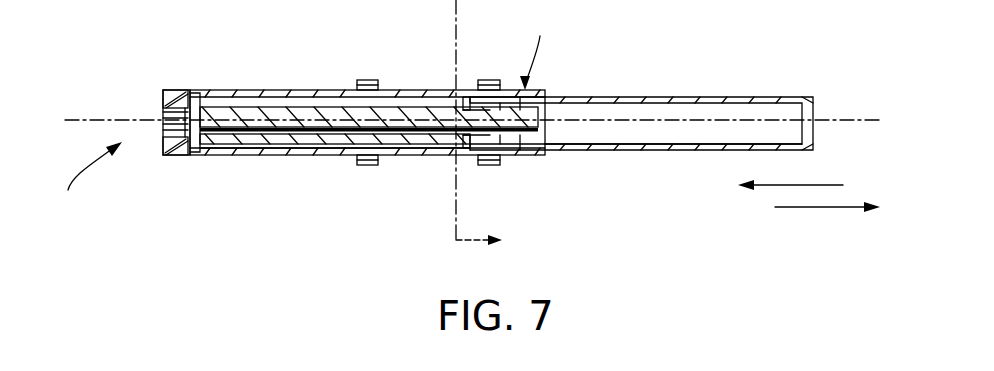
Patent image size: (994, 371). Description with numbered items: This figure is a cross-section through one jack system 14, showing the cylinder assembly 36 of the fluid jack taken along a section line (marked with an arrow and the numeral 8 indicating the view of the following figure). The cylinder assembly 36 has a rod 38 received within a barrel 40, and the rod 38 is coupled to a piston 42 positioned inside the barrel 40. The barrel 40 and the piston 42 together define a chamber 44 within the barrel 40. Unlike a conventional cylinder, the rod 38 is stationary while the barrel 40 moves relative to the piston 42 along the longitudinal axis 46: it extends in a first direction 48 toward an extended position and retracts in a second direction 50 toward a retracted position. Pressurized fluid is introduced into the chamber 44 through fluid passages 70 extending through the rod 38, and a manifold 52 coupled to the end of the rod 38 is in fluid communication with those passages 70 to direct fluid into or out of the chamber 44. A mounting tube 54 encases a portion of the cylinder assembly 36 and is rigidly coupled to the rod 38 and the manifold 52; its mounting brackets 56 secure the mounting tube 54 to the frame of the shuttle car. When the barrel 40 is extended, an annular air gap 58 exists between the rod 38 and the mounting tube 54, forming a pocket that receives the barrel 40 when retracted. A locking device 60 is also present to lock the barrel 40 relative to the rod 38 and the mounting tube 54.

The jack system 14 is at (88, 181).
The cylinder assembly 36 is at (536, 50).
The rod 38 is at (321, 114).
The barrel 40 is at (655, 97).
The piston 42 is at (540, 125).
The chamber 44 is at (615, 150).
The longitudinal axis 46 is at (862, 120).
The first direction 48 is at (845, 184).
The second direction 50 is at (800, 212).
The manifold 52 is at (178, 90).
The mounting tube 54 is at (245, 90).
The mounting brackets 56 is at (372, 80).
The annular air gap 58 is at (292, 151).
The locking device 60 is at (460, 150).
The fluid passages 70 is at (333, 142).
The section line 8 is at (488, 132).